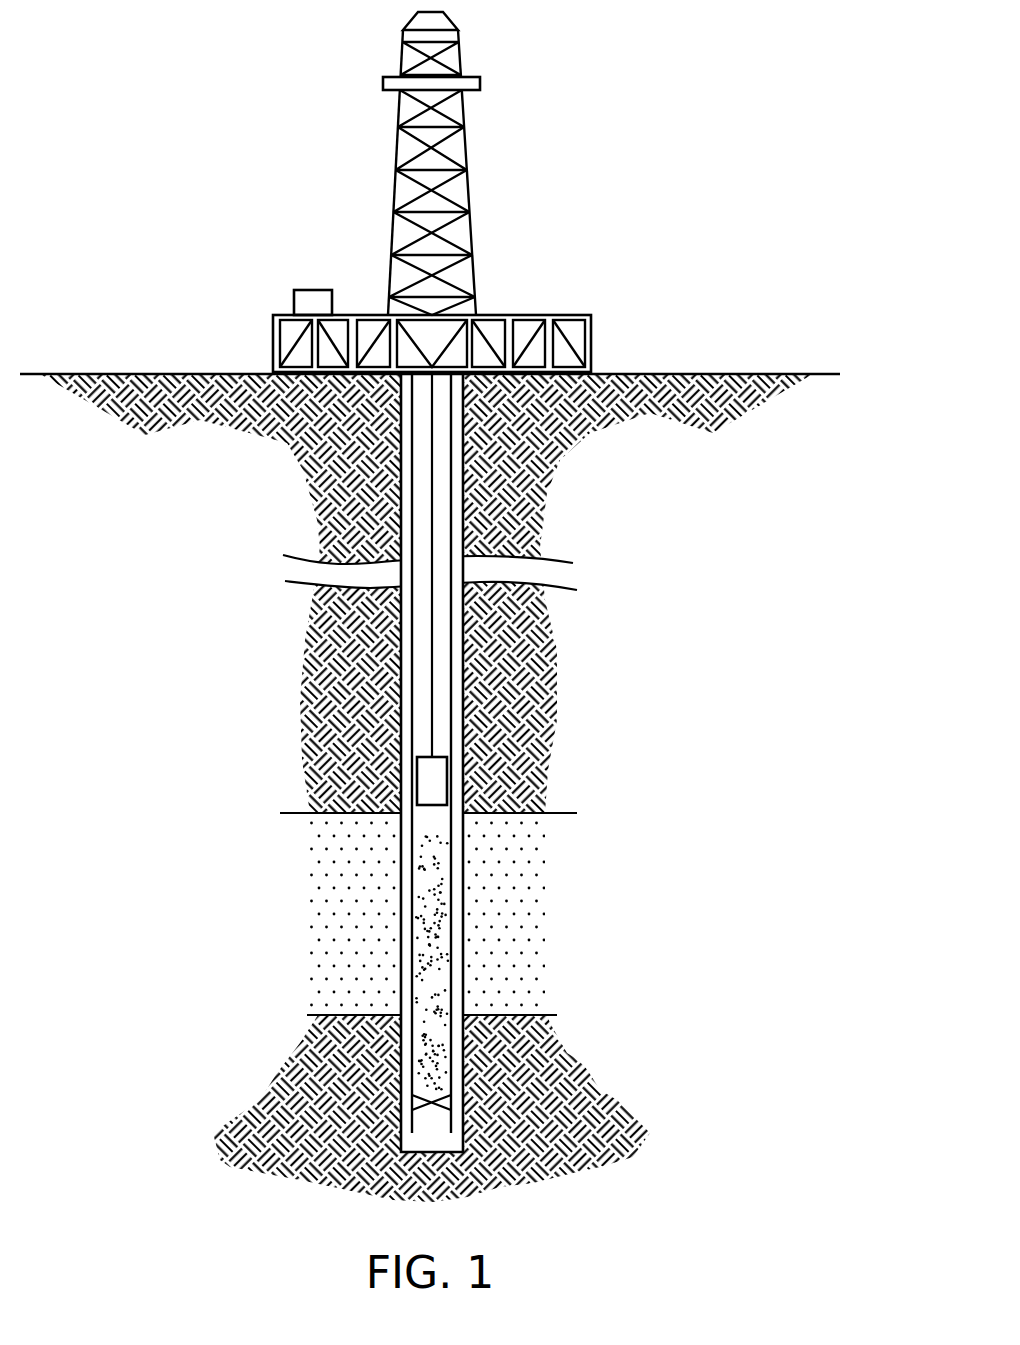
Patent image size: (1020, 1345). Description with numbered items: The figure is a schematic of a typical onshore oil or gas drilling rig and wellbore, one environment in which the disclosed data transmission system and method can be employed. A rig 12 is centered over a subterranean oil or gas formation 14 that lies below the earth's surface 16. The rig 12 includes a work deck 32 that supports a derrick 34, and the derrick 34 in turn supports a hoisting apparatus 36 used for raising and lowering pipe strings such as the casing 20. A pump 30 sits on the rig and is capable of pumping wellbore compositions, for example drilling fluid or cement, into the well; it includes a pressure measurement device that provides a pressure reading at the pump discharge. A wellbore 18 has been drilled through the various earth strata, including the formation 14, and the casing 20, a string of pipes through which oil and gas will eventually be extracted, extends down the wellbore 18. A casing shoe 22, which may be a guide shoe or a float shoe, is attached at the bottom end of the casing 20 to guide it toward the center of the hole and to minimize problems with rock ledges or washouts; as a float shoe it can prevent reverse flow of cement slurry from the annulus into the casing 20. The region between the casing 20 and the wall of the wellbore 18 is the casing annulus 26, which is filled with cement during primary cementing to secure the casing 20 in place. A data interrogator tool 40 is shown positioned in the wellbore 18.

The rig 12 is at (591, 325).
The subterranean oil or gas formation 14 is at (510, 903).
The earth's surface 16 is at (730, 374).
The wellbore 18 is at (463, 497).
The casing 20 is at (412, 650).
The casing shoe 22 is at (455, 1103).
The casing annulus 26 is at (458, 763).
The pump 30 is at (318, 290).
The work deck 32 is at (273, 328).
The derrick 34 is at (460, 58).
The hoisting apparatus 36 is at (447, 297).
The data interrogator tool 40 is at (417, 772).